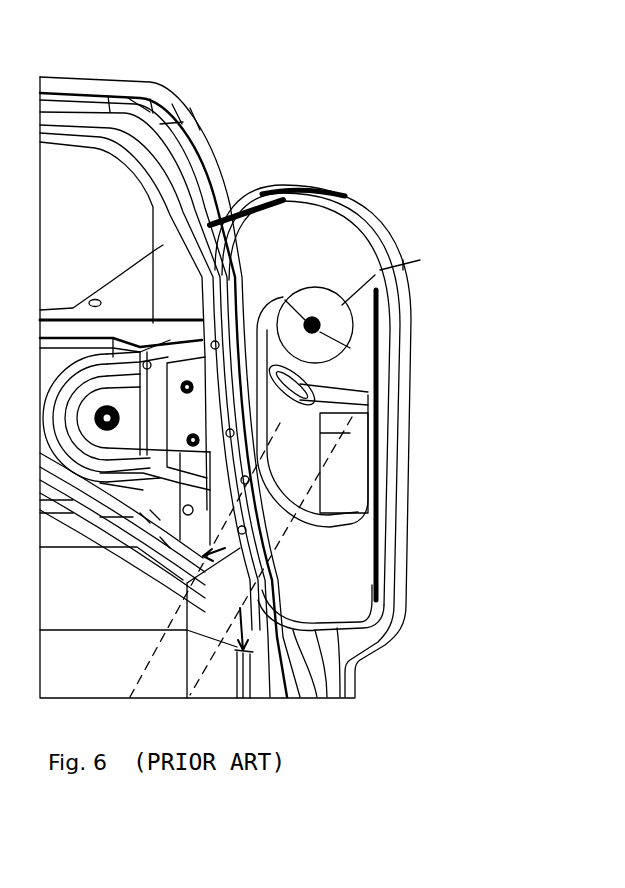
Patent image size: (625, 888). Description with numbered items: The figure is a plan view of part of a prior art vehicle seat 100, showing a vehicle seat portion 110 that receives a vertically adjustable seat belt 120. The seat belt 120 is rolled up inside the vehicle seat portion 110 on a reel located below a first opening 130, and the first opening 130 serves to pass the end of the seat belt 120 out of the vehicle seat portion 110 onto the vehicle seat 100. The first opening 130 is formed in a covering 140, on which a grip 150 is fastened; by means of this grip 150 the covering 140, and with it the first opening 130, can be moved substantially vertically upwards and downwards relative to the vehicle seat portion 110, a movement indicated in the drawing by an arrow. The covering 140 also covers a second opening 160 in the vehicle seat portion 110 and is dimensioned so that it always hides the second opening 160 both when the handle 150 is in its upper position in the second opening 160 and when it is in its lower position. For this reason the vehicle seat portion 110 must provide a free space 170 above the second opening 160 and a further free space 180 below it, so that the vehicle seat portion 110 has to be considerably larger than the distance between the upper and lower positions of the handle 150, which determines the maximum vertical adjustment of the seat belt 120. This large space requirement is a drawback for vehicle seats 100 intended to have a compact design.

The vehicle seat 100 is at (117, 77).
The vehicle seat portion 110 is at (333, 190).
The seat belt 120 is at (367, 423).
The first opening 130 is at (373, 367).
The covering 140 is at (373, 458).
The grip 150 is at (385, 268).
The second opening 160 is at (370, 502).
The free space 170 is at (343, 200).
The free space 180 is at (352, 610).